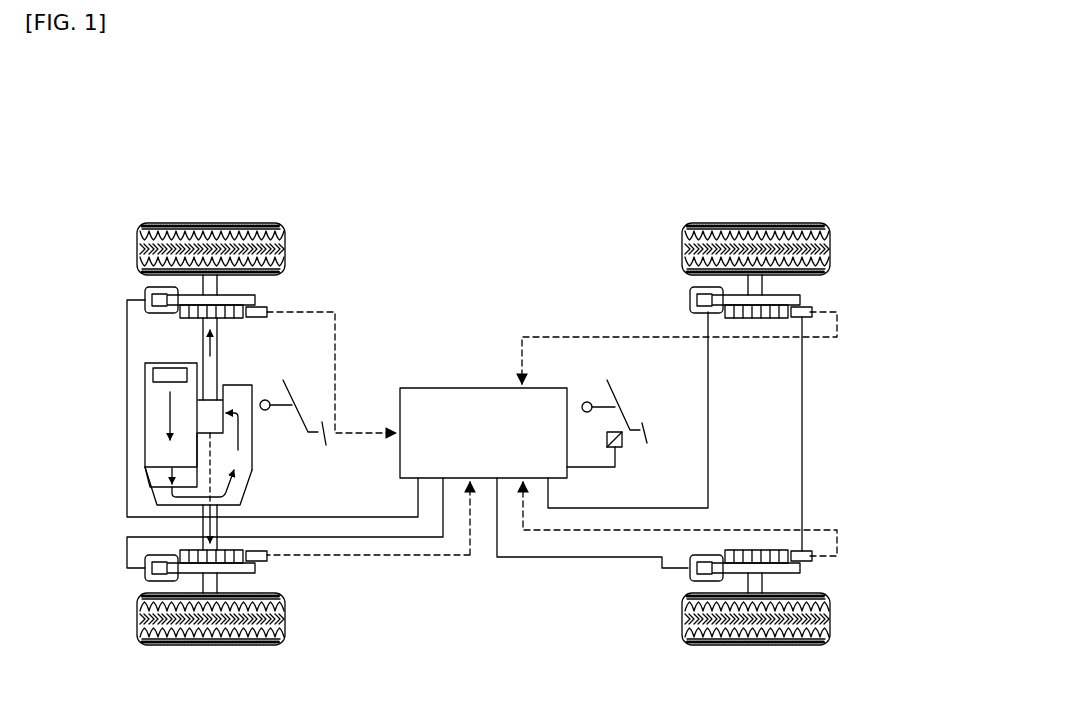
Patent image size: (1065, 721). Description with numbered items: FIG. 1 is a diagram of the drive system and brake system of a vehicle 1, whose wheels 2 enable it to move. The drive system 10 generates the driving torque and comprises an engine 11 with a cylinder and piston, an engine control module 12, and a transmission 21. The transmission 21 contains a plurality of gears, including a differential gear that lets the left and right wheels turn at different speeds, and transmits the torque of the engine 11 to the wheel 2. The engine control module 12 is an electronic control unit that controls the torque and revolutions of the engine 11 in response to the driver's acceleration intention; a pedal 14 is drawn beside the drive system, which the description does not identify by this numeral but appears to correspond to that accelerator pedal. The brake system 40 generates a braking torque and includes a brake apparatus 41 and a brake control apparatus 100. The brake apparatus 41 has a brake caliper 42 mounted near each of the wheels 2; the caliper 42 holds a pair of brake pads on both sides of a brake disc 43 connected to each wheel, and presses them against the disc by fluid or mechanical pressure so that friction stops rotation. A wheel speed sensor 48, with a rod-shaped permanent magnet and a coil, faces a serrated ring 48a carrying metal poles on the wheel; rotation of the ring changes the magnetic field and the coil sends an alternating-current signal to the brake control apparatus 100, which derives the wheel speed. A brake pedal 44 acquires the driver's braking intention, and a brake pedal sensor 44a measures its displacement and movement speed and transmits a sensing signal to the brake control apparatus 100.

The vehicle 1 is at (490, 144).
The wheels 2 is at (226, 222).
The drive system 10 is at (101, 388).
The engine 11 is at (145, 448).
The engine control module 12 is at (153, 372).
The brake pedal 14 is at (296, 396).
The transmission 21 is at (252, 448).
The brake system 40 is at (523, 323).
The brake apparatus 41 is at (328, 258).
The brake caliper 42 is at (145, 293).
The brake disc 43 is at (255, 298).
The brake pedal 44 is at (617, 390).
The brake pedal sensor 44a is at (623, 449).
The wheel speed sensor 48 is at (257, 318).
The serrated ring 48a is at (190, 318).
The brake control apparatus 100 is at (453, 388).